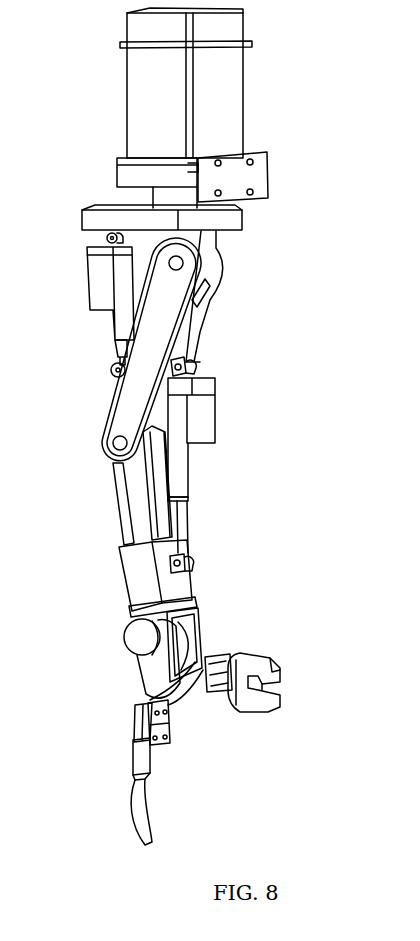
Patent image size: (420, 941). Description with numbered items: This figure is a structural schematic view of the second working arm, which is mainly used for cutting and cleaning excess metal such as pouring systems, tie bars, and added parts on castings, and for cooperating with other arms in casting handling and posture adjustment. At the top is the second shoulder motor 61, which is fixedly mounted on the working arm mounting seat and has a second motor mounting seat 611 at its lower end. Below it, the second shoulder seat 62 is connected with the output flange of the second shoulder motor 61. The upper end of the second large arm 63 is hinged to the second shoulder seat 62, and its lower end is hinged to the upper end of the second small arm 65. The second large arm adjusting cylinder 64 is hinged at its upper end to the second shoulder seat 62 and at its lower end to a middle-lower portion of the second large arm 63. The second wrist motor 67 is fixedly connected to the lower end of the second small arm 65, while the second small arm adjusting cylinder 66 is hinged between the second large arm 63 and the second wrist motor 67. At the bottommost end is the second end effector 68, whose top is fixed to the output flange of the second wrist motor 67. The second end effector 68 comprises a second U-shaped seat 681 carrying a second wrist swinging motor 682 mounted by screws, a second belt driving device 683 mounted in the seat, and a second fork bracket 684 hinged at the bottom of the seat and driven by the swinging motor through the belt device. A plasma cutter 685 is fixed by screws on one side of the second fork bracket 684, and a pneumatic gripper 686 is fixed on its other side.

The second shoulder motor 61 is at (128, 66).
The second motor mounting seat 611 is at (262, 172).
The second shoulder seat 62 is at (100, 210).
The second large arm 63 is at (196, 323).
The second large arm adjusting cylinder 64 is at (90, 300).
The second small arm 65 is at (118, 480).
The second small arm adjusting cylinder 66 is at (188, 480).
The second wrist motor 67 is at (127, 578).
The second end effector 68 is at (201, 726).
The second U-shaped seat 681 is at (142, 677).
The second wrist swinging motor 682 is at (130, 645).
The second belt driving device 683 is at (203, 647).
The second fork bracket 684 is at (175, 700).
The plasma cutter 685 is at (152, 752).
The pneumatic gripper 686 is at (270, 700).